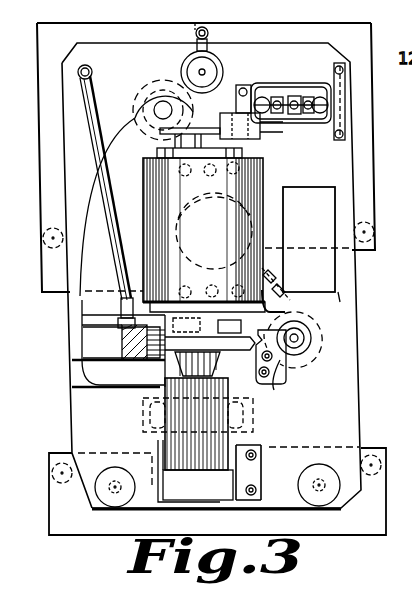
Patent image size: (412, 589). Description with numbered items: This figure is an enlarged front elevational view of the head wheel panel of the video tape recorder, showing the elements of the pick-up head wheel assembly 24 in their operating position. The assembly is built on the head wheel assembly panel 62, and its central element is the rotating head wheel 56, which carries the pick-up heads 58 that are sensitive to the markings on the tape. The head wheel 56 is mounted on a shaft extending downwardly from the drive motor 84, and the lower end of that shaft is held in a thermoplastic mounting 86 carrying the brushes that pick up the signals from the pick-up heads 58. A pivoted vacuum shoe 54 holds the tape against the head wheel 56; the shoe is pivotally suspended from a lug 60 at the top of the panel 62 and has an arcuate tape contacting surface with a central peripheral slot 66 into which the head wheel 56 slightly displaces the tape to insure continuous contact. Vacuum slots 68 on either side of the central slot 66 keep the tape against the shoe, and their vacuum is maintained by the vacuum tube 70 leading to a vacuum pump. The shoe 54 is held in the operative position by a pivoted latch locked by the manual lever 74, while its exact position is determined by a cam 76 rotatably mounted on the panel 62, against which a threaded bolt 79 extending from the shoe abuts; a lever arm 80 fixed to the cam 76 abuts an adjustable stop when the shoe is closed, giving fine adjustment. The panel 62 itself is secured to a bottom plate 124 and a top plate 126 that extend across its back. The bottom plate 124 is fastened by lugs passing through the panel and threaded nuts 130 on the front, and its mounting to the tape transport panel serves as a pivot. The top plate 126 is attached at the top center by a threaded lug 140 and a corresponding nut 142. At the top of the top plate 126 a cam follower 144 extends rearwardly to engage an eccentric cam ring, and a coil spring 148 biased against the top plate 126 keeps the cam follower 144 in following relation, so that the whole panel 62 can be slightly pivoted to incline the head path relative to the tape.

The pick-up head wheel assembly 24 is at (381, 302).
The vacuum shoe 54 is at (86, 298).
The head wheel 56 is at (222, 355).
The pick-up heads 58 is at (207, 326).
The lug 60 is at (163, 110).
The head wheel assembly panel 62 is at (346, 414).
The central peripheral slot 66 is at (148, 358).
The vacuum slots 68 is at (120, 344).
The vacuum tube 70 is at (103, 160).
The manual lever 74 is at (309, 240).
The cam 76 is at (290, 366).
The threaded bolt 79 is at (272, 384).
The lever arm 80 is at (275, 276).
The drive motor 84 is at (268, 173).
The thermoplastic mounting 86 is at (236, 446).
The bottom plate 124 is at (369, 522).
The top plate 126 is at (363, 27).
The threaded nuts 130 is at (118, 506).
The threaded lug 140 is at (190, 67).
The nut 142 is at (223, 76).
The cam follower 144 is at (196, 33).
The coil spring 148 is at (209, 33).